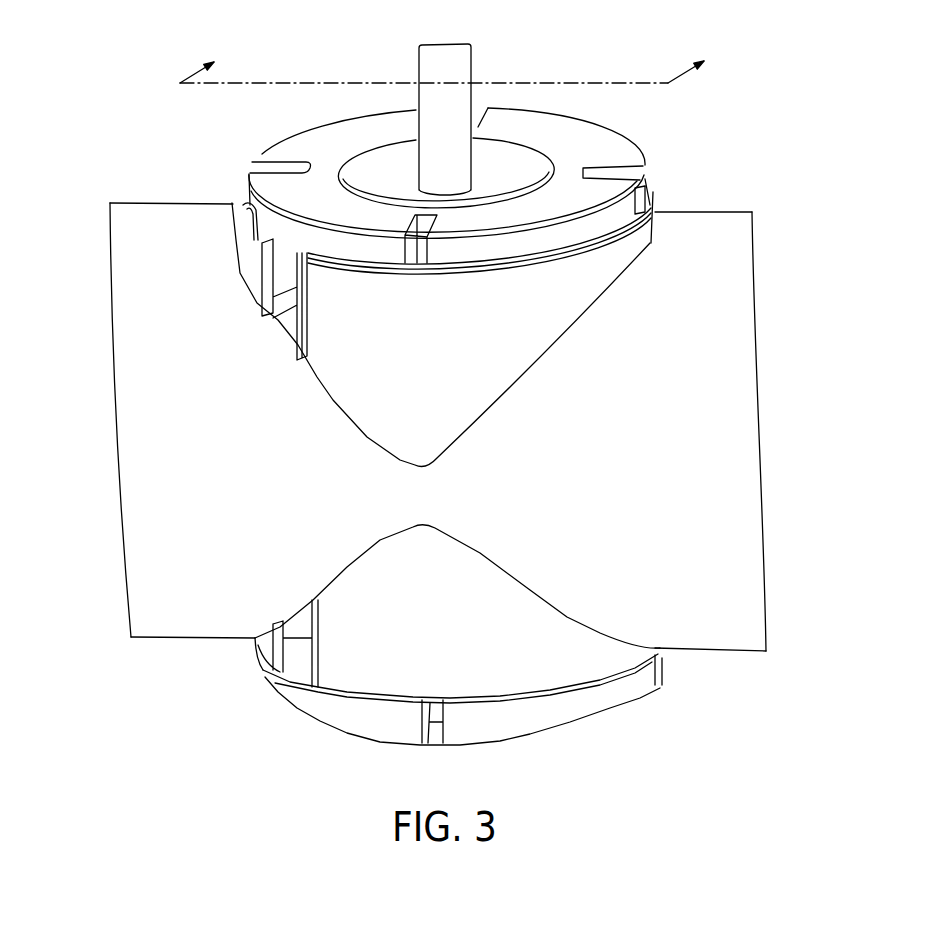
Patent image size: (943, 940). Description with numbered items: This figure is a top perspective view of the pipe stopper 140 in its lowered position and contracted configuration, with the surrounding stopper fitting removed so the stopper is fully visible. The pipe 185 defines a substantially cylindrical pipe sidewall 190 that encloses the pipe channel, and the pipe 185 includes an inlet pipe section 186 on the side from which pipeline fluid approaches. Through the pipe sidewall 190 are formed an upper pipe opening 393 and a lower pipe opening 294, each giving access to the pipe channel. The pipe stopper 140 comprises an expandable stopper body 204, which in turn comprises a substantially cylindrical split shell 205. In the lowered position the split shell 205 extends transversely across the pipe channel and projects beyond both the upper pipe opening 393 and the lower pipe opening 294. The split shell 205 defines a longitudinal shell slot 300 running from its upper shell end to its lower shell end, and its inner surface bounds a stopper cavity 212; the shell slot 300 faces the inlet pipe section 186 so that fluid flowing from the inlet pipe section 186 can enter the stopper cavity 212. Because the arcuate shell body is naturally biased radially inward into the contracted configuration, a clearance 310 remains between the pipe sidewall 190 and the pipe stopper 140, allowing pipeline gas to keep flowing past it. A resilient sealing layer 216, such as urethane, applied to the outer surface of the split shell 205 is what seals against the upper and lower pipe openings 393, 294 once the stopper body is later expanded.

The pipe stopper 140 is at (628, 64).
The expandable stopper body 204 is at (565, 106).
The split shell 205 is at (390, 293).
The clearance 310 is at (239, 208).
The shell slot 300 is at (279, 268).
The inlet pipe section 186 is at (132, 297).
The pipe sidewall 190 is at (740, 388).
The pipe 185 is at (746, 470).
The upper pipe opening 393 is at (338, 397).
The lower pipe opening 294 is at (353, 568).
The stopper cavity 212 is at (298, 667).
The sealing layer 216 is at (540, 657).